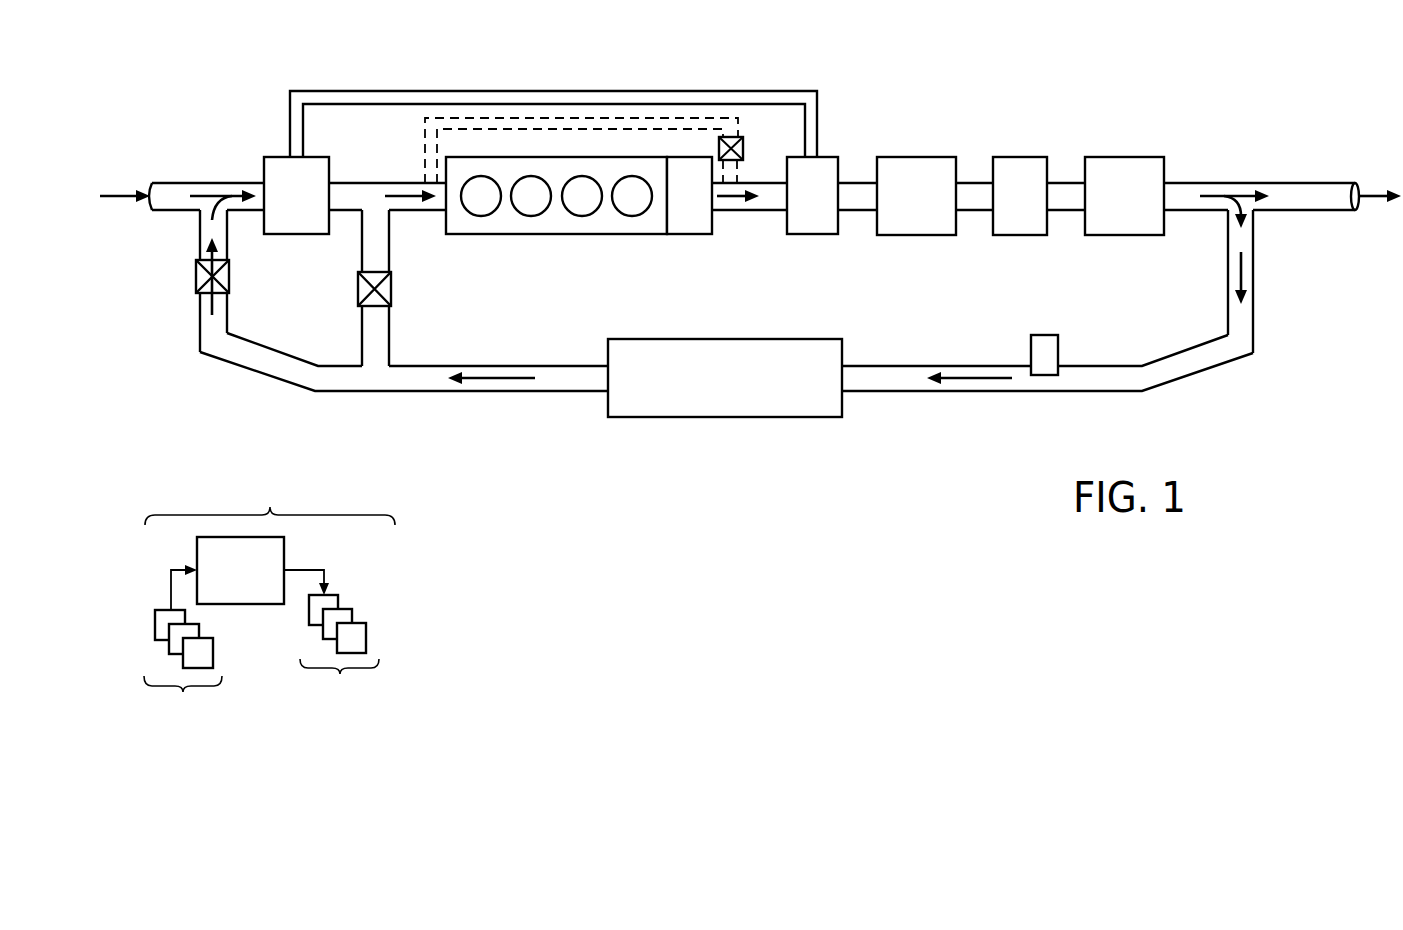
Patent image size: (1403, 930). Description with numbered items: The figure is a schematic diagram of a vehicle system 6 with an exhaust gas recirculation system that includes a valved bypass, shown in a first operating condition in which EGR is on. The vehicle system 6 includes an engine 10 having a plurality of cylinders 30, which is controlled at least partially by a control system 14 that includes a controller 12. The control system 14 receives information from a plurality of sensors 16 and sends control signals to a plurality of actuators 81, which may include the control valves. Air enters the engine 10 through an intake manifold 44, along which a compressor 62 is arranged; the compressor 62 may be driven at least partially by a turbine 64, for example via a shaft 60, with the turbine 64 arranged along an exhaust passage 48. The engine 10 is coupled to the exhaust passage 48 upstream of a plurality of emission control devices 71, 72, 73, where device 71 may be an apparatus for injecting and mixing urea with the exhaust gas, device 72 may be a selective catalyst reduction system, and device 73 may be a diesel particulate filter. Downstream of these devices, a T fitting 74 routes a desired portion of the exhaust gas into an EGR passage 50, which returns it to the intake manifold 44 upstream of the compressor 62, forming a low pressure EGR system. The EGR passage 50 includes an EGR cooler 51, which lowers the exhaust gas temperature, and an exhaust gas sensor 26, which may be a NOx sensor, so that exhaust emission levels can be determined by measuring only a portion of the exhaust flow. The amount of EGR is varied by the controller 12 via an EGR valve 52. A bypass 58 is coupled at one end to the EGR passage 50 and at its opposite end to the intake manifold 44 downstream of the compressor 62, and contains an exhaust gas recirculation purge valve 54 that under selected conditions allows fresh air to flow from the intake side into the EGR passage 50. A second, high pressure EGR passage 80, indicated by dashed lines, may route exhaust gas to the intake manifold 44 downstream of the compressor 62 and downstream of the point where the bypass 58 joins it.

The vehicle system 6 is at (895, 78).
The engine 10 is at (563, 222).
The controller 12 is at (229, 585).
The control system 14 is at (678, 207).
The sensors 16 is at (183, 650).
The exhaust gas sensor 26 is at (1044, 335).
The cylinders 30 is at (637, 214).
The intake manifold 44 is at (336, 207).
The exhaust passage 48 is at (758, 207).
The EGR passage 50 is at (1255, 300).
The EGR cooler 51 is at (713, 390).
The EGR valve 52 is at (196, 284).
The exhaust gas recirculation purge valve 54 is at (392, 293).
The bypass 58 is at (390, 352).
The shaft 60 is at (497, 91).
The compressor 62 is at (284, 207).
The turbine 64 is at (800, 207).
The emission control device 71 is at (904, 207).
The emission control device 72 is at (1008, 207).
The emission control device 73 is at (1112, 207).
The T fitting 74 is at (1255, 212).
The EGR passage 80 is at (742, 165).
The actuators 81 is at (339, 643).